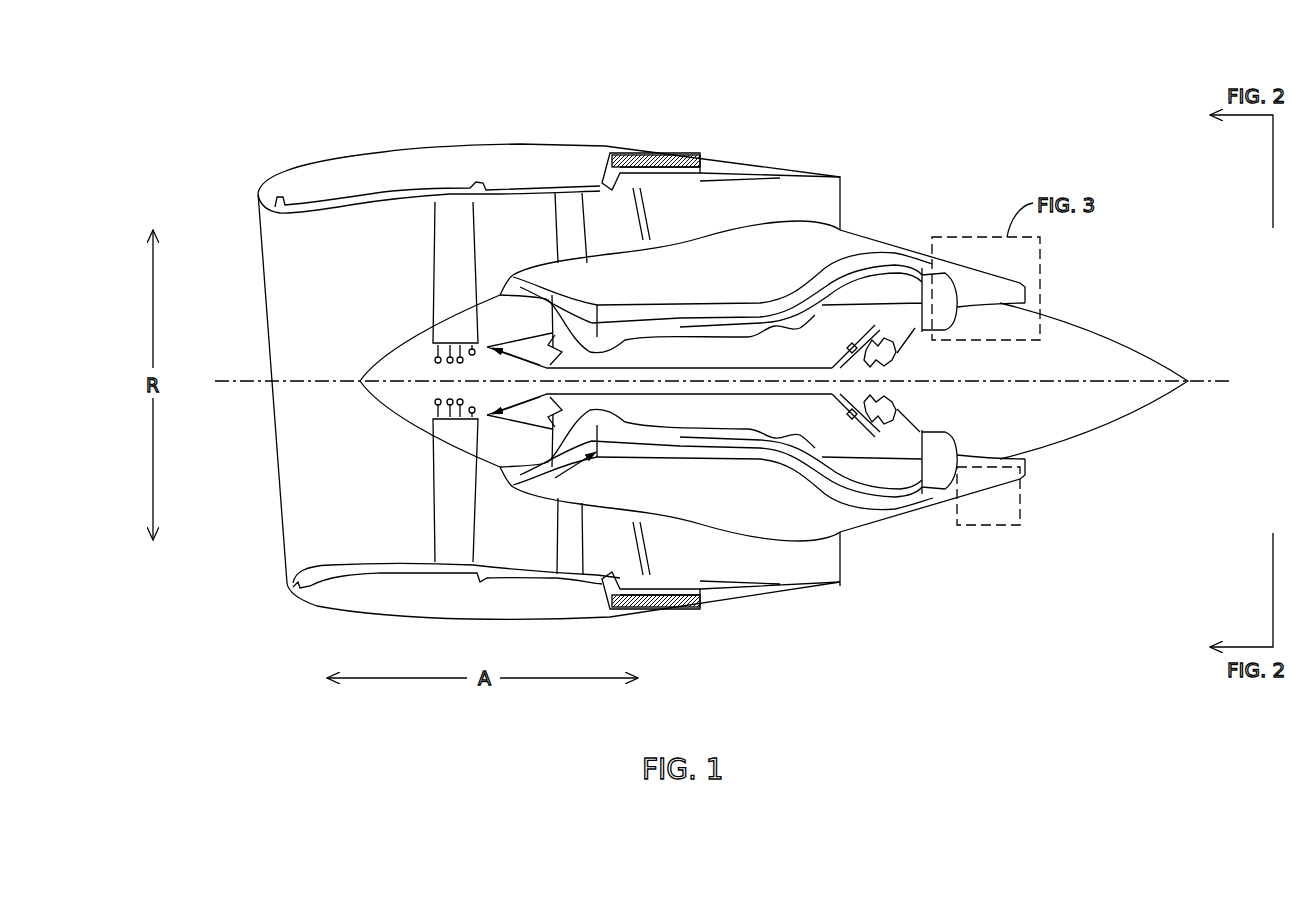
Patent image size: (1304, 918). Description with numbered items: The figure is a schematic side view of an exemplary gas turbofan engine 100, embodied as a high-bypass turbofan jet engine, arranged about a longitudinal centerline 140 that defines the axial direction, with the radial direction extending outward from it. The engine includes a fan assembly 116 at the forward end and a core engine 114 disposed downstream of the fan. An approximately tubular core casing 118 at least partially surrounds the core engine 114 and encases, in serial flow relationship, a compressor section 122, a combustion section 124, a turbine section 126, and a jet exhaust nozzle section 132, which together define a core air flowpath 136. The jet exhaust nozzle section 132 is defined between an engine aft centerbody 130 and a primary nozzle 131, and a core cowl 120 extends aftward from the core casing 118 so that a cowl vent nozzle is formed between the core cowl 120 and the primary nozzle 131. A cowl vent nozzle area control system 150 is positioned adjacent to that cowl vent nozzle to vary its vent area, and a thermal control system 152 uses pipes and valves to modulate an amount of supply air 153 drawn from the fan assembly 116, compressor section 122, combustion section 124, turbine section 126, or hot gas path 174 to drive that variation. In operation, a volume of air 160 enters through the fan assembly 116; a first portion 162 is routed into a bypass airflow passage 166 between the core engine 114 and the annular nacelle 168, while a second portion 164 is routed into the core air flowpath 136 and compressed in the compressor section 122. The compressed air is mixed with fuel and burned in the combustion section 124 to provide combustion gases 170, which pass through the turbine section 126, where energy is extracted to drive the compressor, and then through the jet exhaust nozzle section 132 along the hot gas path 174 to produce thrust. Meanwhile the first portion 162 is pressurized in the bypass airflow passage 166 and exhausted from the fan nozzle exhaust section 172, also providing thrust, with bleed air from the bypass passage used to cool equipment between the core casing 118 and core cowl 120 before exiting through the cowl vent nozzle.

The gas turbofan engine 100 is at (226, 134).
The core engine 114 is at (882, 506).
The fan assembly 116 is at (318, 505).
The core casing 118 is at (730, 532).
The core cowl 120 is at (910, 247).
The compressor section 122 is at (597, 305).
The combustion section 124 is at (767, 305).
The turbine section 126 is at (836, 294).
The engine aft centerbody 130 is at (987, 305).
The primary nozzle 131 is at (1028, 302).
The jet exhaust nozzle section 132 is at (1036, 459).
The core air flowpath 136 is at (616, 432).
The longitudinal centerline 140 is at (1207, 380).
The cowl vent nozzle area control system 150 is at (1010, 527).
The thermal control system 152 is at (705, 300).
The supply air 153 is at (860, 261).
The volume of air 160 is at (350, 287).
The first portion 162 is at (484, 224).
The second portion 164 is at (497, 465).
The bypass airflow passage 166 is at (700, 222).
The annular nacelle 168 is at (411, 110).
The combustion gases 170 is at (835, 463).
The fan nozzle exhaust section 172 is at (852, 576).
The hot gas path 174 is at (838, 490).